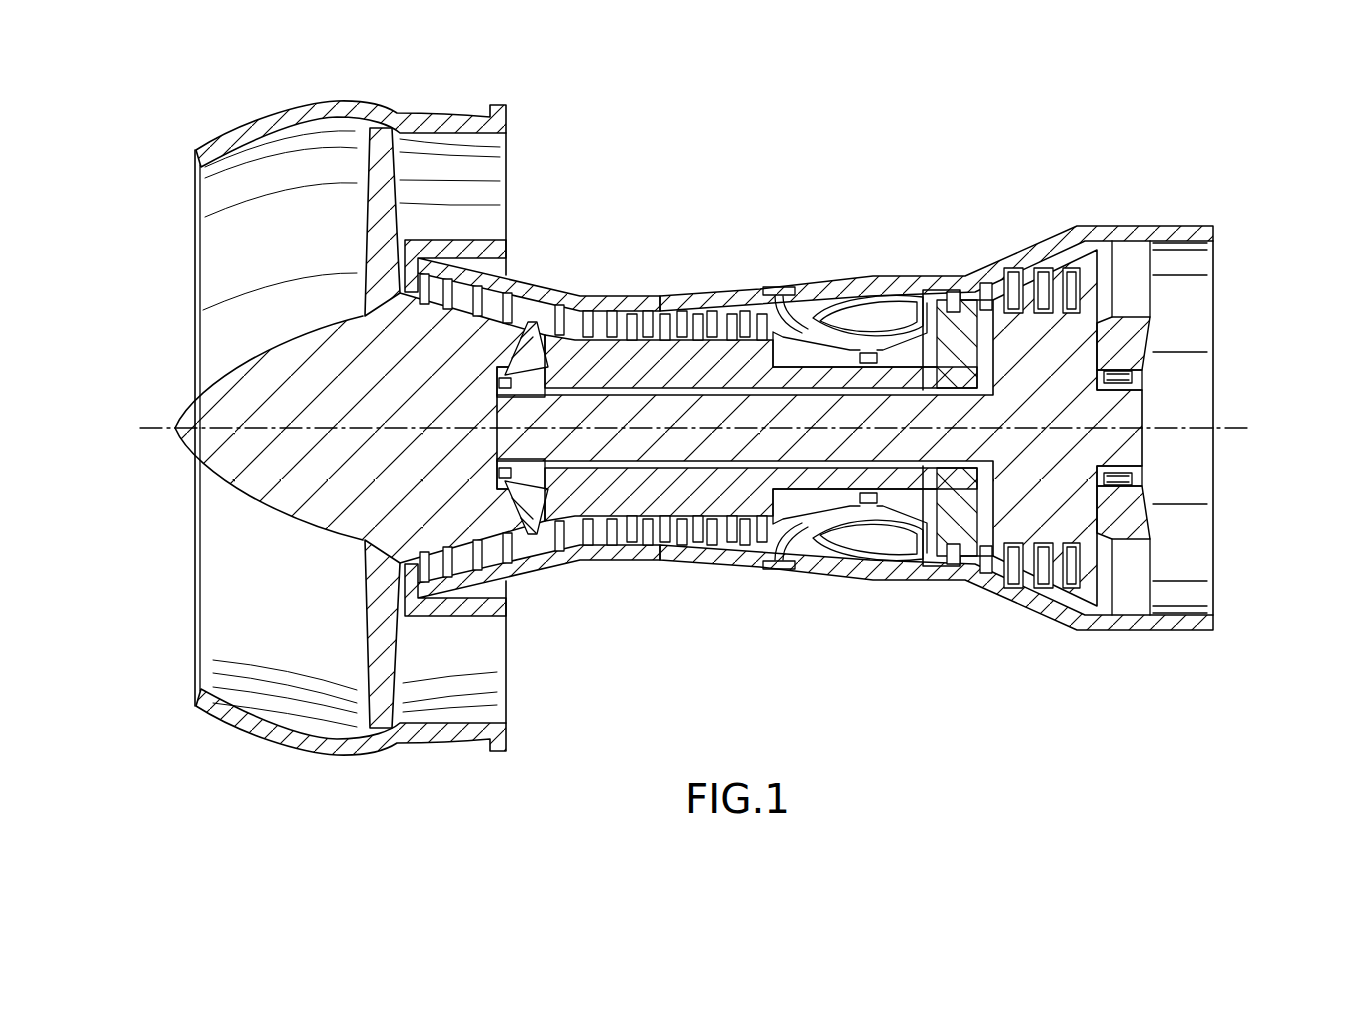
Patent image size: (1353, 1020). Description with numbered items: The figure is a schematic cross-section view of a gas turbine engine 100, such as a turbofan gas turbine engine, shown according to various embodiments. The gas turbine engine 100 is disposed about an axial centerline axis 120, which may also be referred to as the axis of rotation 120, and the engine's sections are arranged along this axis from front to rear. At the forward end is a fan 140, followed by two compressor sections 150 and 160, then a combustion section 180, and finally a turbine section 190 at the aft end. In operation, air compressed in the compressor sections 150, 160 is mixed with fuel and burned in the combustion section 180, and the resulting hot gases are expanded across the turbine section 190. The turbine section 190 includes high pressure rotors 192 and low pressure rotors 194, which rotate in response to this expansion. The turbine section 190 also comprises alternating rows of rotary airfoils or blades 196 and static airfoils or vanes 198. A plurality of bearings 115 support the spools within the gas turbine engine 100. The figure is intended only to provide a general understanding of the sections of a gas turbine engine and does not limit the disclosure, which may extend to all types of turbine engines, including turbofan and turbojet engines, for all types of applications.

The gas turbine engine 100 is at (943, 158).
The bearings 115 is at (1134, 376).
The axial centerline axis 120 is at (158, 428).
The fan 140 is at (397, 182).
The compressor section 150 is at (492, 762).
The compressor section 160 is at (762, 574).
The combustion section 180 is at (952, 592).
The turbine section 190 is at (1118, 641).
The high pressure rotors 192 is at (960, 292).
The low pressure rotors 194 is at (1087, 337).
The rotary airfoils or blades 196 is at (1022, 264).
The static airfoils or vanes 198 is at (1042, 264).